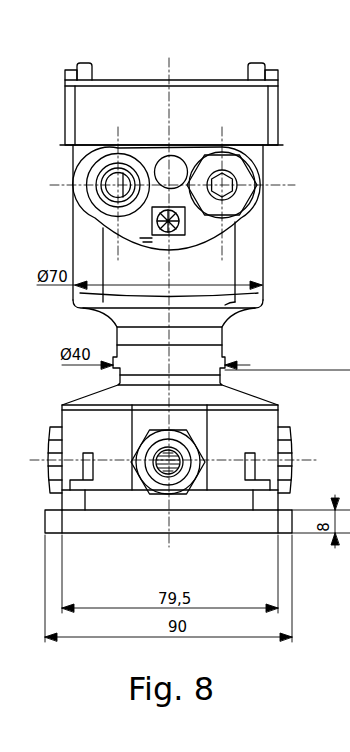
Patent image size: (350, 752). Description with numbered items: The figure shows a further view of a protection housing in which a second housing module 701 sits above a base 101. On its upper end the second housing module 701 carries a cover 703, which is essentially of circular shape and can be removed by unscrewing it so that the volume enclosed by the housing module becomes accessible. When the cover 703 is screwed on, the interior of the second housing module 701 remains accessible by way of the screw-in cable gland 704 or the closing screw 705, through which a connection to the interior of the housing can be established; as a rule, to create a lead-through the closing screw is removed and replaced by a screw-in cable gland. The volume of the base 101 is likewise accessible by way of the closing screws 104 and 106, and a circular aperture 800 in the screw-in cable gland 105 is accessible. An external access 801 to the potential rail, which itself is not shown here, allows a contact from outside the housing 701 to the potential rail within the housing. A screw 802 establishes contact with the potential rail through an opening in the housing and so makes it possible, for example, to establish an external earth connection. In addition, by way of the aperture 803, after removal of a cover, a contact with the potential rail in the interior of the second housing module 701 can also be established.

The cover 703 is at (188, 97).
The aperture 803 is at (160, 155).
The screw-in cable gland 704 is at (80, 183).
The closing screw 705 is at (263, 187).
The external access 801 is at (225, 242).
The screw 802 is at (168, 238).
The second housing module 701 is at (265, 250).
The base 101 is at (233, 393).
The closing screw 106 is at (50, 427).
The closing screw 104 is at (282, 427).
The screw-in cable gland 105 is at (168, 492).
The circular aperture 800 is at (180, 478).